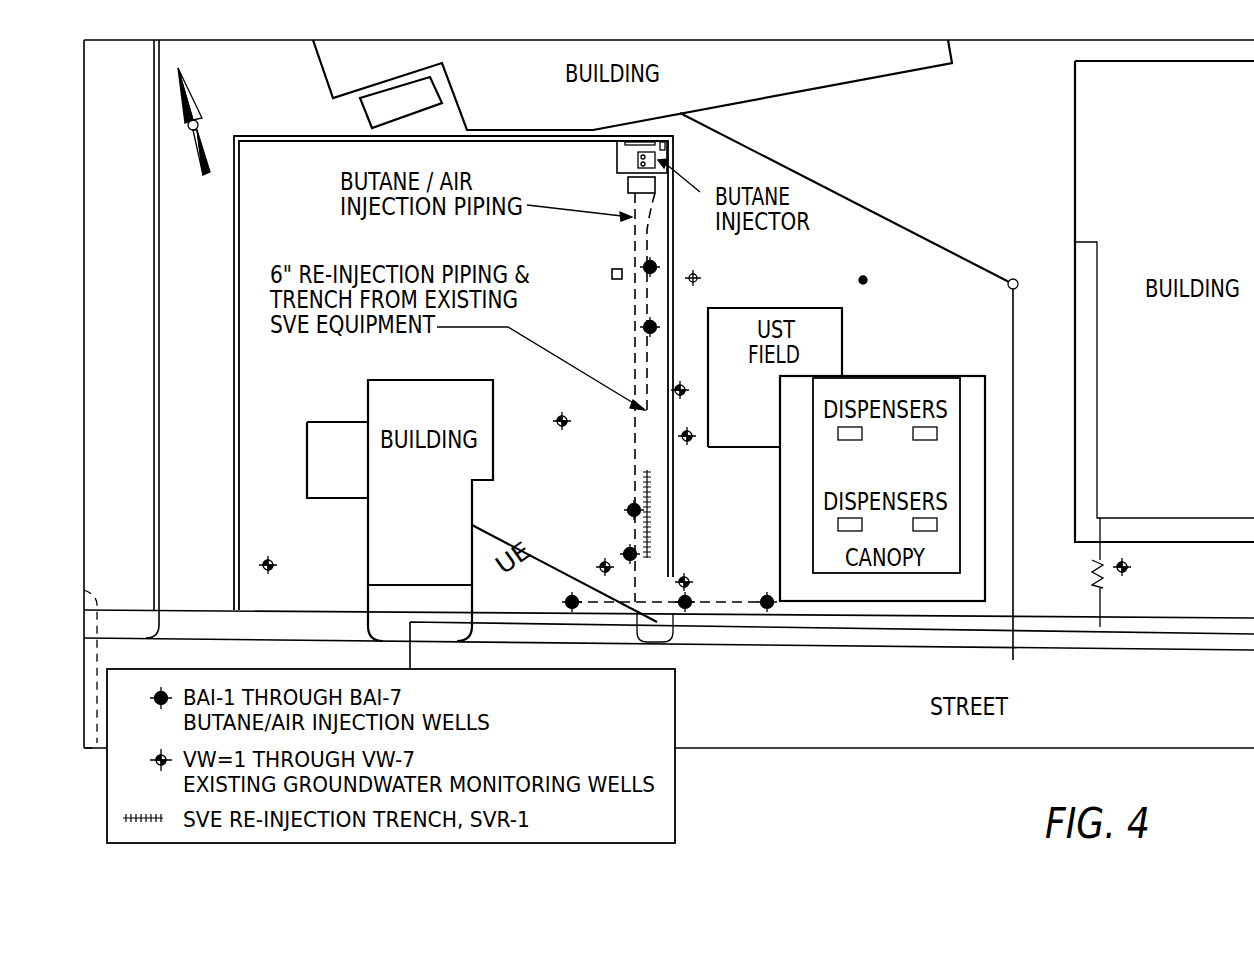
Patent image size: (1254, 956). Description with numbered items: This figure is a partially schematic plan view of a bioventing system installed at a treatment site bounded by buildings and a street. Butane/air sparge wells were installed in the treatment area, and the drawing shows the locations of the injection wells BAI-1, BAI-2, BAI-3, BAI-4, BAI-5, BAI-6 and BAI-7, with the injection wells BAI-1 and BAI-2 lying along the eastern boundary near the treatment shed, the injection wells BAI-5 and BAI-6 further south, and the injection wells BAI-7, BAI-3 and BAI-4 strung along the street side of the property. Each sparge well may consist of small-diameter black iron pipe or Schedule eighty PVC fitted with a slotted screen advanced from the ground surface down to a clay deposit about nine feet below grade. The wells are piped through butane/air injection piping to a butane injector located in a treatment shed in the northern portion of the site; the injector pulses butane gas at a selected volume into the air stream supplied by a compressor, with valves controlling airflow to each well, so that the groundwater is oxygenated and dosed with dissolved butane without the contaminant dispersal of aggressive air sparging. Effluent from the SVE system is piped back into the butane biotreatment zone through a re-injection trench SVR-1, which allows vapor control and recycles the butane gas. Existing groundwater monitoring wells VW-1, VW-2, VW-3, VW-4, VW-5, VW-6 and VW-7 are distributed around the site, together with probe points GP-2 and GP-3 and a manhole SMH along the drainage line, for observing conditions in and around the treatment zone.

The butane/air injection well BAI-1 is at (645, 264).
The butane/air injection well BAI-2 is at (645, 326).
The butane/air injection well BAI-3 is at (686, 609).
The butane/air injection well BAI-4 is at (768, 609).
The butane/air injection well BAI-5 is at (629, 504).
The butane/air injection well BAI-6 is at (626, 548).
The butane/air injection well BAI-7 is at (543, 602).
The existing groundwater monitoring well VW-1 is at (689, 392).
The existing groundwater monitoring well VW-2 is at (686, 445).
The existing groundwater monitoring well VW-3 is at (684, 576).
The existing groundwater monitoring well VW-4 is at (604, 560).
The existing groundwater monitoring well VW-5 is at (274, 561).
The existing groundwater monitoring well VW-6 is at (1127, 570).
The existing groundwater monitoring well VW-7 is at (565, 413).
The geoprobe point GP-2 is at (863, 284).
The geoprobe point GP-3 is at (698, 277).
The sewer manhole SMH is at (1035, 457).
The SVE re-injection trench SVR-1 is at (645, 478).